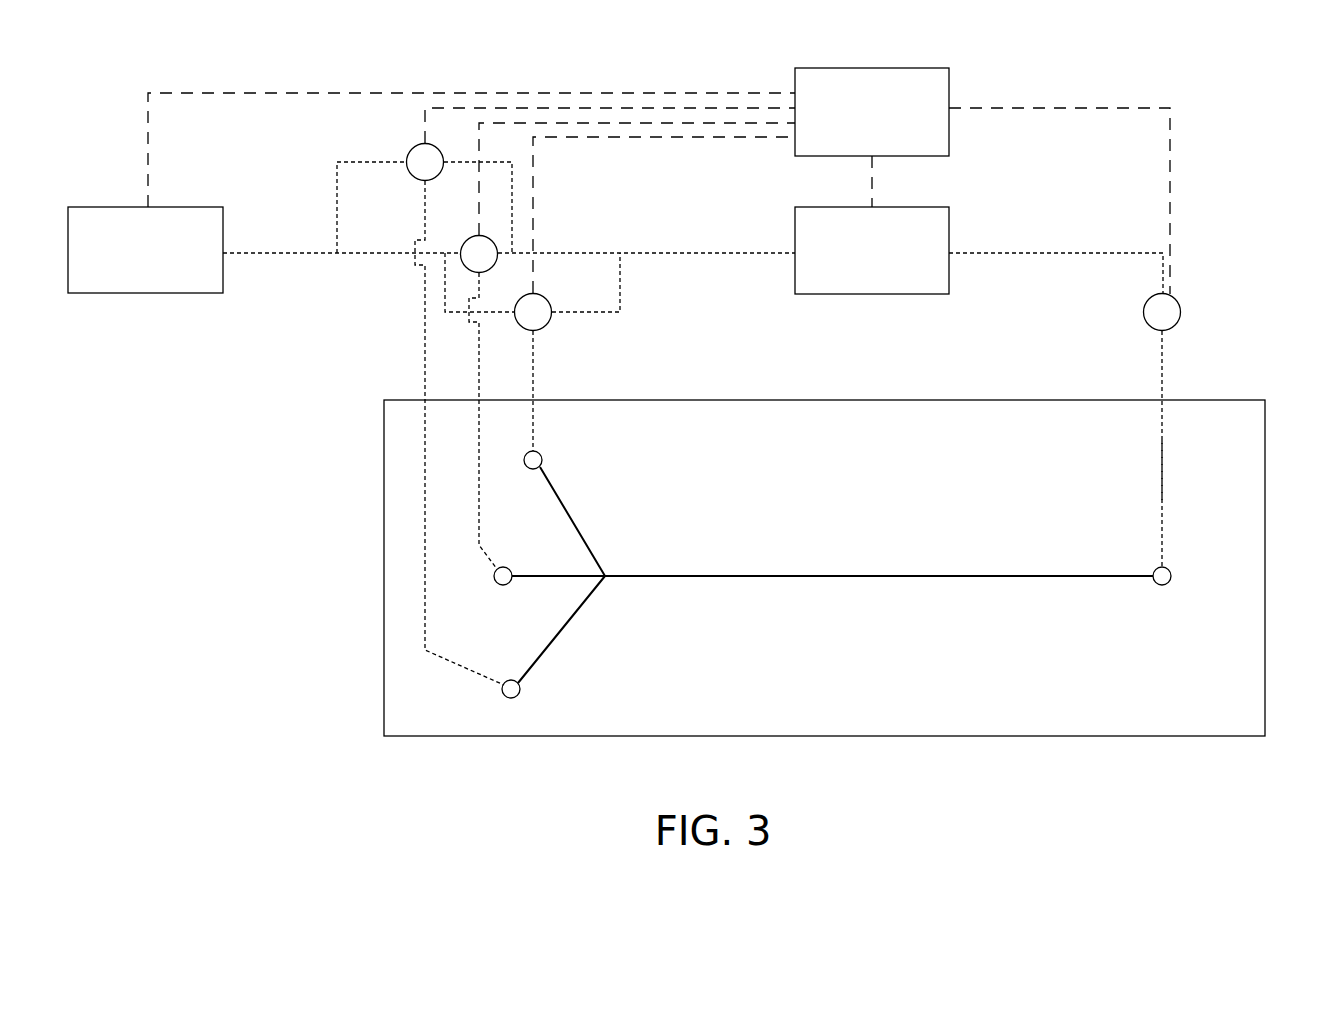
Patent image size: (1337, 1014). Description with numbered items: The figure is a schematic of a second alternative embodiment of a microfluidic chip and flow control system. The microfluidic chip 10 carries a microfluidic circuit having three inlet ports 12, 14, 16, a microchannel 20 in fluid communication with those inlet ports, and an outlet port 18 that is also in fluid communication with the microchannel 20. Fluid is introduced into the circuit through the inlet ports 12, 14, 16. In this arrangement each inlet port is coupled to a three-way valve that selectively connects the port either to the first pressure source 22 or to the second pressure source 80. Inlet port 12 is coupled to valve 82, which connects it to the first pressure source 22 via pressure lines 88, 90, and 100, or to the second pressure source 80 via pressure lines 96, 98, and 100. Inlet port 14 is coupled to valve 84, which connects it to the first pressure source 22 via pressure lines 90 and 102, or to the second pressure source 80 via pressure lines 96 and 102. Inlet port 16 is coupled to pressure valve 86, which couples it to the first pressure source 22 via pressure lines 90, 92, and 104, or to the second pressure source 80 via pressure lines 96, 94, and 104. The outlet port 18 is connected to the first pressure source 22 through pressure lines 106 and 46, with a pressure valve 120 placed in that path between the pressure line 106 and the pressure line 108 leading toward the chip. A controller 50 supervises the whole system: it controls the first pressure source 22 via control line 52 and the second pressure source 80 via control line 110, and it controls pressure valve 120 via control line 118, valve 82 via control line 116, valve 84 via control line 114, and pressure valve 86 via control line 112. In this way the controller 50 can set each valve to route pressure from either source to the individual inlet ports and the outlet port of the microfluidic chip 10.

The microfluidic chip 10 is at (1265, 436).
The inlet port 12 is at (542, 460).
The inlet port 14 is at (503, 586).
The inlet port 16 is at (520, 688).
The outlet port 18 is at (1164, 586).
The microchannel 20 is at (948, 574).
The pressure source #1 22 is at (950, 218).
The pressure line 46 is at (1162, 476).
The controller 50 is at (950, 83).
The control line 52 is at (872, 172).
The pressure source #2 80 is at (150, 294).
The valve 82 is at (548, 327).
The valve 84 is at (466, 240).
The pressure valve 86 is at (409, 151).
The pressure line 88 is at (620, 295).
The pressure line 90 is at (590, 253).
The pressure line 92 is at (515, 176).
The pressure line 94 is at (337, 197).
The pressure line 96 is at (366, 258).
The pressure line 98 is at (448, 314).
The pressure line 100 is at (535, 410).
The pressure line 102 is at (479, 513).
The pressure line 104 is at (424, 505).
The pressure line 106 is at (1092, 253).
The fluid line 108 is at (1162, 360).
The control line 110 is at (352, 92).
The control line 112 is at (645, 108).
The control line 114 is at (678, 123).
The control line 116 is at (733, 137).
The control line 118 is at (1126, 107).
The pressure valve 120 is at (1181, 316).